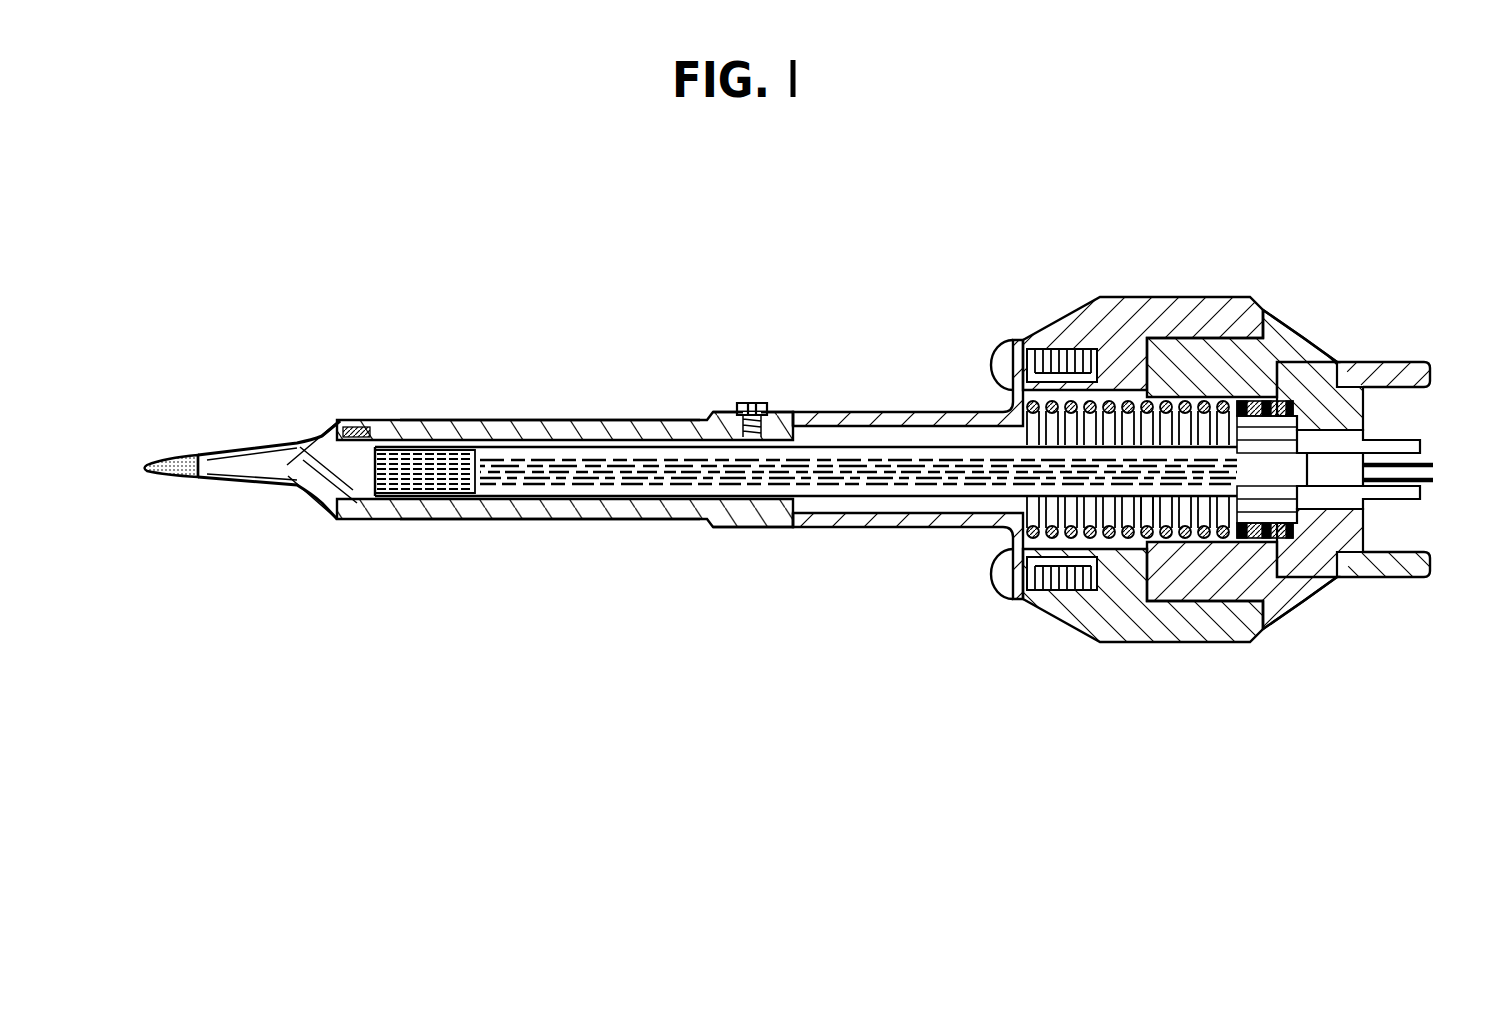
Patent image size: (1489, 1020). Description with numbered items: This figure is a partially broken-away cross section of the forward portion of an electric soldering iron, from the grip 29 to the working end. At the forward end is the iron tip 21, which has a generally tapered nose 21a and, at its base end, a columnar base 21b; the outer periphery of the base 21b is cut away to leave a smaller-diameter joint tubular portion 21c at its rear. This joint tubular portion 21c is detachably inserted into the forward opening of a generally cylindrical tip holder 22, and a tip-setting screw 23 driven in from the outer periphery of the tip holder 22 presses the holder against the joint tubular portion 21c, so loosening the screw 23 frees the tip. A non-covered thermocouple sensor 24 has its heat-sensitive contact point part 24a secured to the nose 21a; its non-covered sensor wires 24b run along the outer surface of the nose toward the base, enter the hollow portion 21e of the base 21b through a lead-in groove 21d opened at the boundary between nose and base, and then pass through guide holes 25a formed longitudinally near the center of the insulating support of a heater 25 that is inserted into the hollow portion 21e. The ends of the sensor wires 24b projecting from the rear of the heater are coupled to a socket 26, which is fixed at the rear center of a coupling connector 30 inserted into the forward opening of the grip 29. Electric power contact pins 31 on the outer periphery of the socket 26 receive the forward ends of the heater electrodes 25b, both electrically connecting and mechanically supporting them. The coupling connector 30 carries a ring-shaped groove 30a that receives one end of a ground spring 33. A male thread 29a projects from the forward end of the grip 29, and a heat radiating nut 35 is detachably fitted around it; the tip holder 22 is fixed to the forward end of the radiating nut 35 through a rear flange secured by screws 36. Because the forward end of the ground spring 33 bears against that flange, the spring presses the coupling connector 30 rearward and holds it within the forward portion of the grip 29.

The iron tip 21 is at (488, 526).
The nose 21a is at (218, 482).
The columnar base 21b is at (552, 418).
The joint tubular portion 21c is at (752, 512).
The lead-in groove 21d is at (357, 420).
The hollow portion 21e is at (593, 500).
The tip holder 22 is at (872, 520).
The tip-setting screw 23 is at (743, 403).
The non-covered thermocouple sensor 24 is at (250, 445).
The contact point part 24a is at (200, 453).
The sensor wires 24b is at (293, 440).
The heater 25 is at (830, 450).
The guide holes 25a is at (435, 487).
The electrodes 25b is at (1147, 500).
The socket 26 is at (1347, 473).
The grip 29 is at (1405, 570).
The male thread 29a is at (1235, 340).
The coupling connector 30 is at (1195, 560).
The groove 30a is at (1265, 345).
The electric power contact pins 31 is at (1340, 438).
The ground spring 33 is at (1080, 570).
The heat radiating nut 35 is at (1113, 320).
The screws 36 is at (995, 342).